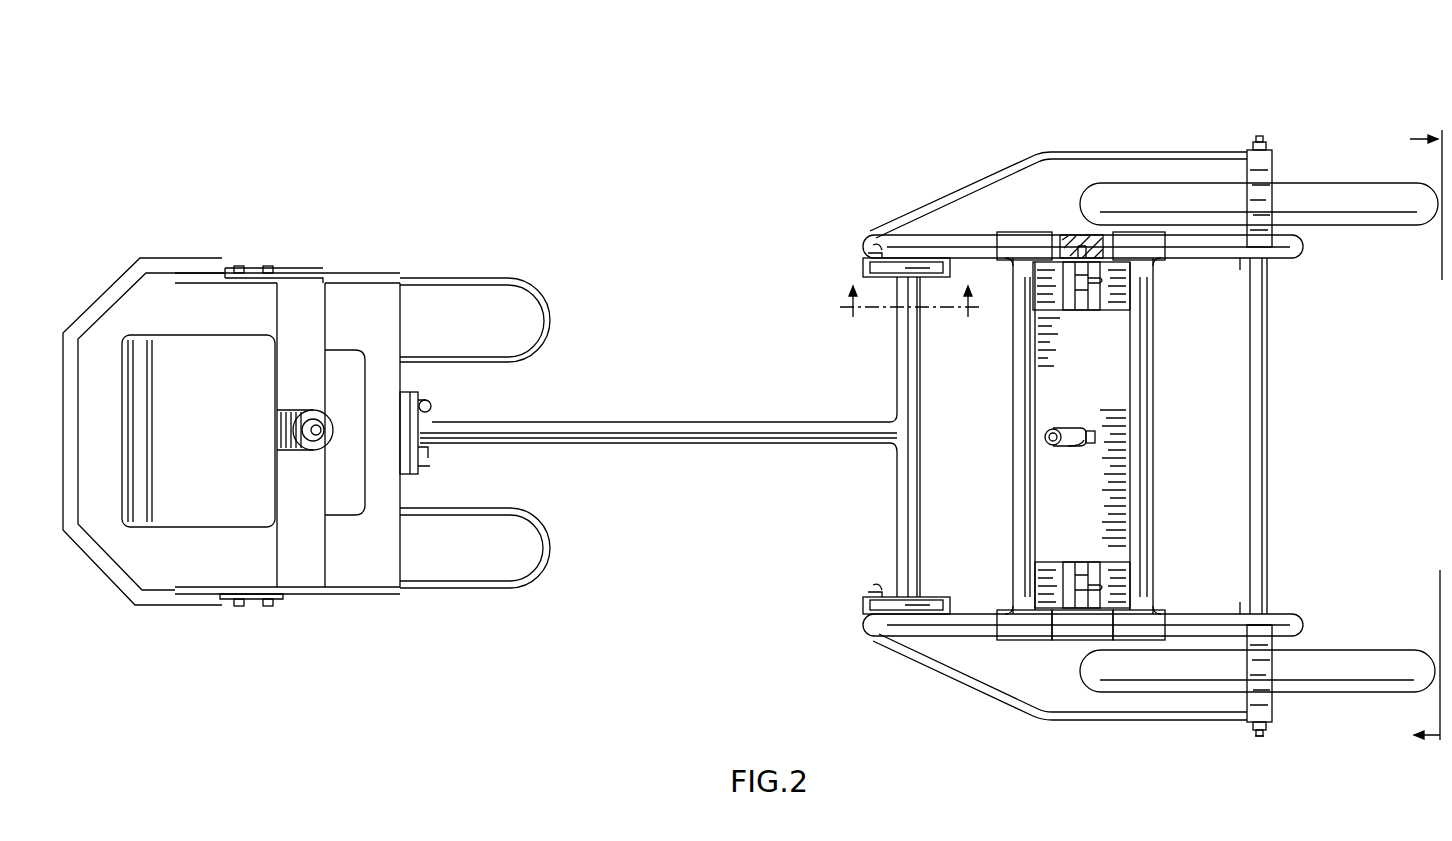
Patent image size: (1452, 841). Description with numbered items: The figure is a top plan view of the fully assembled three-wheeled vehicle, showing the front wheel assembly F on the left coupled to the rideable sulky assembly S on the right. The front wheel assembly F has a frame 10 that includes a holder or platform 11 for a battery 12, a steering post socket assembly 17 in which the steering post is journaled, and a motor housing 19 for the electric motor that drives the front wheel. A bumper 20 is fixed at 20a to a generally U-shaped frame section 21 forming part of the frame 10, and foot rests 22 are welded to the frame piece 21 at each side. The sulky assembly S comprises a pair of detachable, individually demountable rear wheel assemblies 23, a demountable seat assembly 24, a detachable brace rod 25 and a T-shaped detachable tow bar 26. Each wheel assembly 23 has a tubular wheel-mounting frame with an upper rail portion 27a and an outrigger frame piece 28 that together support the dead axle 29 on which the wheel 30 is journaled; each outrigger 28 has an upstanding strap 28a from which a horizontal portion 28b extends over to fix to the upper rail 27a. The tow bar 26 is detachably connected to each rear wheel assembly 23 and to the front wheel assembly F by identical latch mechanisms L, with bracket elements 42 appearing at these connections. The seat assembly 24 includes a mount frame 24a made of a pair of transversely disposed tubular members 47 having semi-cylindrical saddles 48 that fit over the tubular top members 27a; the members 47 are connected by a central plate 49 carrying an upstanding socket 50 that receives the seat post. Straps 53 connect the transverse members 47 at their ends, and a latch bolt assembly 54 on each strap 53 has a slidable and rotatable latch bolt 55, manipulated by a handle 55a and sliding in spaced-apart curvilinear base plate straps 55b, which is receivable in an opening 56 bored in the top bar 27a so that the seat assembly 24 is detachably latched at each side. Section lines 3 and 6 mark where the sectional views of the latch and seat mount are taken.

The frame 10 is at (410, 598).
The holder or platform 11 is at (122, 476).
The battery 12 is at (222, 436).
The steering post socket assembly 17 is at (300, 412).
The motor housing 19 is at (350, 512).
The bumper 20 is at (100, 560).
The bumper fixing 20a is at (240, 606).
The U-shaped frame section 21 is at (402, 298).
The foot rests 22 is at (555, 300).
The rear wheel assemblies 23 is at (1278, 172).
The seat assembly 24 is at (1095, 424).
The mount frame 24a is at (1170, 335).
The brace rod 25 is at (1272, 383).
The connecting or tow bar 26 is at (773, 450).
The upper rail portion 27a is at (1237, 272).
The outrigger frame piece 28 is at (1055, 156).
The upstanding strap 28a is at (1262, 137).
The horizontal portion 28b is at (1245, 700).
The dead axle 29 is at (1258, 737).
The wheel 30 is at (1366, 213).
The bracket 42 is at (424, 455).
The transversely disposed tubular members 47 is at (1030, 488).
The semi-cylindrical end pieces or saddles 48 is at (1013, 233).
The central plate 49 is at (1097, 394).
The upstanding socket 50 is at (1086, 447).
The straps 53 is at (1115, 310).
The latch bolt assembly 54 is at (1078, 305).
The latch bolt 55 is at (1088, 235).
The handle 55a is at (1098, 588).
The base plate straps 55b is at (1103, 300).
The opening 56 is at (1075, 246).
The latch mechanism L is at (430, 400).
The front wheel assembly F is at (148, 612).
The rideable sulky assembly S is at (1082, 724).
The section line 3 is at (1413, 439).
The section line 6 is at (910, 314).